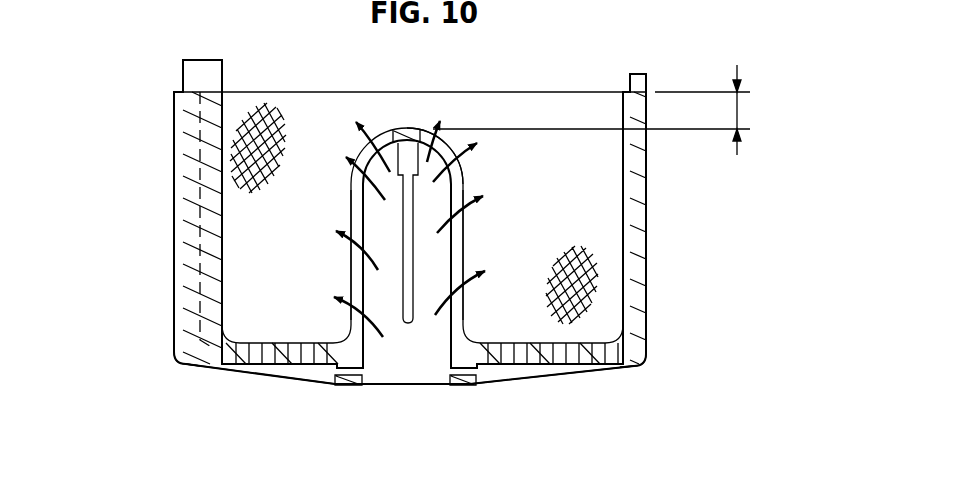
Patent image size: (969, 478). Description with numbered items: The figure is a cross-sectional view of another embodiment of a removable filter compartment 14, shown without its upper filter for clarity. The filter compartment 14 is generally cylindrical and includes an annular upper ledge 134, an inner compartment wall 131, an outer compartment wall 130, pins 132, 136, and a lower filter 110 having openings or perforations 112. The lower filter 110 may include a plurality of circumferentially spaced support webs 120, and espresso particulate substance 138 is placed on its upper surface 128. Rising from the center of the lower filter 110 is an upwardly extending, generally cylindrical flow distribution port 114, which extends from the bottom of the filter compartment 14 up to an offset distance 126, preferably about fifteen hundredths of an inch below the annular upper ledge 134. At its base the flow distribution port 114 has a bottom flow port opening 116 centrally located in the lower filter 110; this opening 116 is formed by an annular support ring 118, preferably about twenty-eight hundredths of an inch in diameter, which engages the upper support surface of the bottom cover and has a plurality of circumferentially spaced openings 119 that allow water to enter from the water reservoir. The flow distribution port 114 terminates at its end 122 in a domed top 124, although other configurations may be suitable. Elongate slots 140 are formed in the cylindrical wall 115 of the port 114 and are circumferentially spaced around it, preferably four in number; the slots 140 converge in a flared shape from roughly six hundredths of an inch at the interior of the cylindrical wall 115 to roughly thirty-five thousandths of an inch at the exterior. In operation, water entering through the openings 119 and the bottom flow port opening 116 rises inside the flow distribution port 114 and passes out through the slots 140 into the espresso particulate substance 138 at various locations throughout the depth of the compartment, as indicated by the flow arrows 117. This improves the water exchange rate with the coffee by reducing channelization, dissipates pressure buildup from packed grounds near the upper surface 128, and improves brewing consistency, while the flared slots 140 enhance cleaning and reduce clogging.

The removable filter compartment 14 is at (684, 246).
The lower filter 110 is at (176, 351).
The openings or perforations 112 is at (260, 375).
The flow distribution port 114 is at (463, 252).
The cylindrical wall 115 is at (350, 270).
The bottom flow port opening 116 is at (430, 384).
The flow arrows 117 is at (343, 212).
The annular support ring 118 is at (355, 386).
The circumferentially spaced openings 119 is at (333, 375).
The support webs 120 is at (531, 385).
The end 122 is at (412, 128).
The domed top 124 is at (450, 140).
The offset distance 126 is at (740, 112).
The upper surface 128 is at (247, 338).
The outer compartment wall 130 is at (175, 223).
The inner compartment wall 131 is at (645, 358).
The pin 132 is at (183, 80).
The annular upper ledge 134 is at (257, 92).
The pin 136 is at (648, 74).
The espresso particulate substance 138 is at (232, 158).
The elongate slots 140 is at (407, 263).